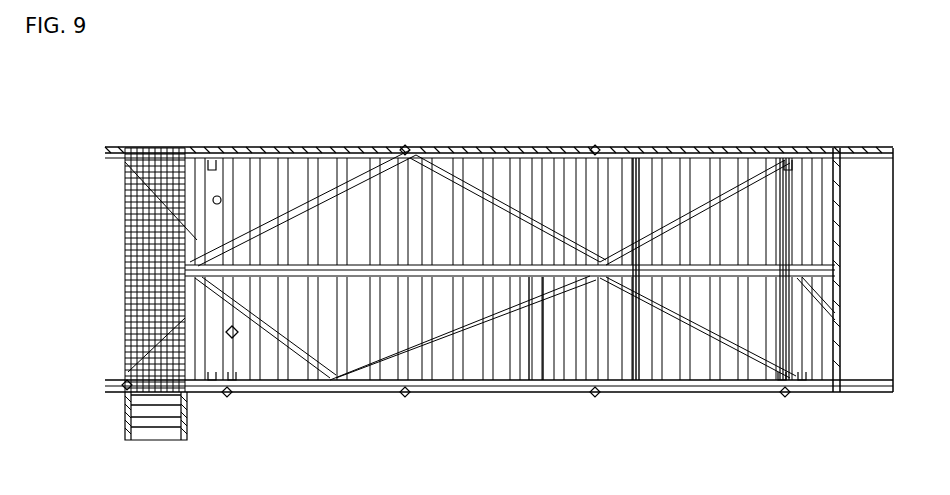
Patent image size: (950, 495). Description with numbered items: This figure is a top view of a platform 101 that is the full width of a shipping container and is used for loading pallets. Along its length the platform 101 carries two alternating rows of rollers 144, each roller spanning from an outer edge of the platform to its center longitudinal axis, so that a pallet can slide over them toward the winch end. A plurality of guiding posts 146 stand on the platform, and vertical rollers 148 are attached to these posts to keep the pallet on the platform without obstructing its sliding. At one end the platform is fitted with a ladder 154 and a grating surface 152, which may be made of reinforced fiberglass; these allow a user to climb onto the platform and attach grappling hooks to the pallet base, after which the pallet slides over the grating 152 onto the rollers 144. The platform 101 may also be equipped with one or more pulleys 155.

The platform 101 is at (638, 157).
The rollers 144 is at (478, 377).
The guiding posts 146 is at (600, 147).
The vertical rollers 148 is at (788, 152).
The grating surface 152 is at (125, 258).
The ladder 154 is at (125, 420).
The pulleys 155 is at (234, 334).